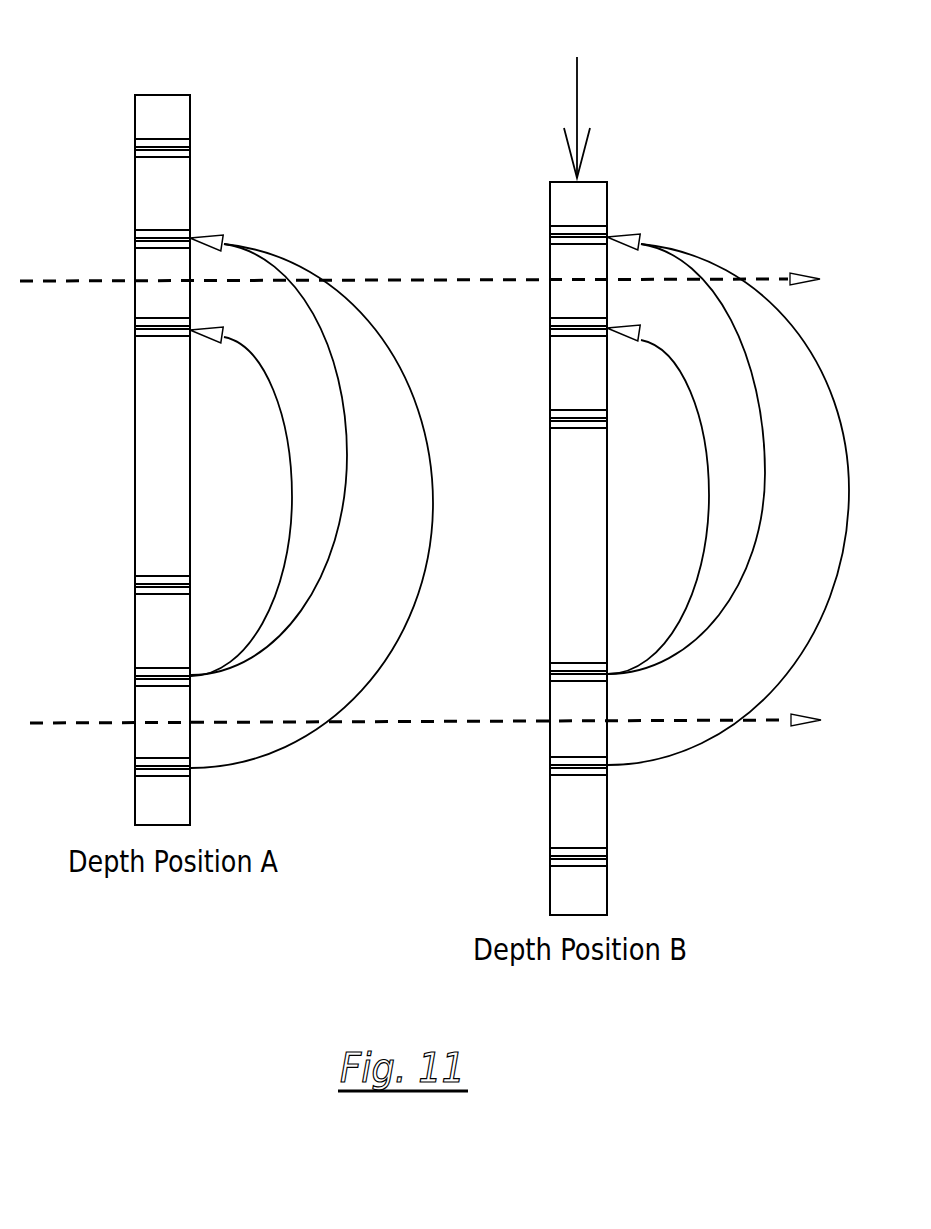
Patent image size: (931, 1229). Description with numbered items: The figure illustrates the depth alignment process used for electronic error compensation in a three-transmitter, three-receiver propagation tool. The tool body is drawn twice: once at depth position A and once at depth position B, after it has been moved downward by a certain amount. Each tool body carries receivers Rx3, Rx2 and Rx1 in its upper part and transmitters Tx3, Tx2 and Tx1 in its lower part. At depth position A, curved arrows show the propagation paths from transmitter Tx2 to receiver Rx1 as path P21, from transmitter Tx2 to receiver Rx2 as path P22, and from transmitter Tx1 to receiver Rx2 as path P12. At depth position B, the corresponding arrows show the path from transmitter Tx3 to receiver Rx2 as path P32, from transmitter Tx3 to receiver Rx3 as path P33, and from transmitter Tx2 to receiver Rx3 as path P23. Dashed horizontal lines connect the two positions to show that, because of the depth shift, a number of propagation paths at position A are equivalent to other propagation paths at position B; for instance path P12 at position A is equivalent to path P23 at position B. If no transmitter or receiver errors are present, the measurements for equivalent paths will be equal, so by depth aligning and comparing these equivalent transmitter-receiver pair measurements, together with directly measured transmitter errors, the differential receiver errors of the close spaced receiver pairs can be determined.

The receiver Rx1 is at (336, 376).
The receiver Rx2 is at (336, 286).
The receiver Rx3 is at (336, 194).
The transmitter Tx1 is at (336, 815).
The transmitter Tx2 is at (336, 724).
The transmitter Tx3 is at (336, 631).
The propagation path P12 is at (318, 506).
The propagation path P21 is at (252, 506).
The propagation path P22 is at (277, 459).
The propagation path P23 is at (735, 504).
The propagation path P32 is at (670, 507).
The propagation path P33 is at (695, 459).